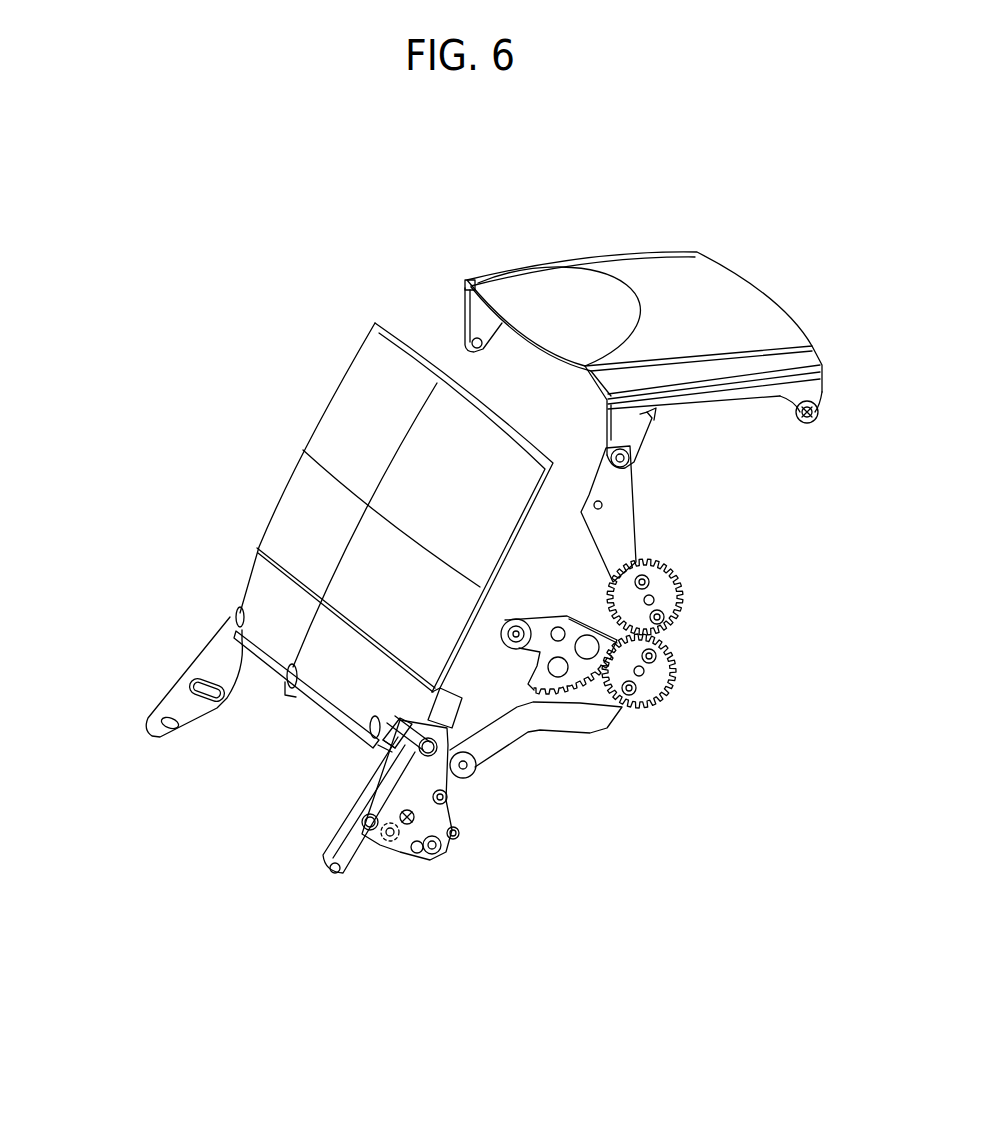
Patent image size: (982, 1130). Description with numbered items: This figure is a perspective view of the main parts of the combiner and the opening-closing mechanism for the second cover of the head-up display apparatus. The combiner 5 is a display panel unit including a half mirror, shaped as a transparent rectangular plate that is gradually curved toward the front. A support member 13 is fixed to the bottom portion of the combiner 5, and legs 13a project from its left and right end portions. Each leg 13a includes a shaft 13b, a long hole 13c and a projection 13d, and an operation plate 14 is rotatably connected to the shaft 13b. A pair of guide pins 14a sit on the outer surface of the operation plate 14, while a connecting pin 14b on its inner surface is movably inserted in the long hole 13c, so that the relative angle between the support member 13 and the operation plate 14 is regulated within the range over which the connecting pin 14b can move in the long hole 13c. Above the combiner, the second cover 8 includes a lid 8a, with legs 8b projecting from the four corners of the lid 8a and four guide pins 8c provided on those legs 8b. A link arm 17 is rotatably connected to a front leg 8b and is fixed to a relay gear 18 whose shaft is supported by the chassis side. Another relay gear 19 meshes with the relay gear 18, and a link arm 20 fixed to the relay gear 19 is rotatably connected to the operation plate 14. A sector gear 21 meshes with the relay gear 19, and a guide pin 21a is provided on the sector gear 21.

The combiner 5 is at (332, 397).
The second cover 8 is at (690, 250).
The lid 8a is at (752, 298).
The legs 8b is at (477, 327).
The guide pins 8c is at (628, 462).
The support member 13 is at (253, 548).
The legs 13a is at (230, 632).
The shaft 13b is at (383, 750).
The long hole 13c is at (195, 683).
The projection 13d is at (332, 866).
The operation plate 14 is at (397, 847).
The guide pins 14a is at (445, 798).
The connecting pin 14b is at (363, 850).
The link arm 17 is at (612, 488).
The relay gear 18 is at (668, 605).
The relay gear 19 is at (661, 687).
The link arm 20 is at (556, 725).
The sector gear 21 is at (580, 630).
The guide pin 21a is at (513, 648).